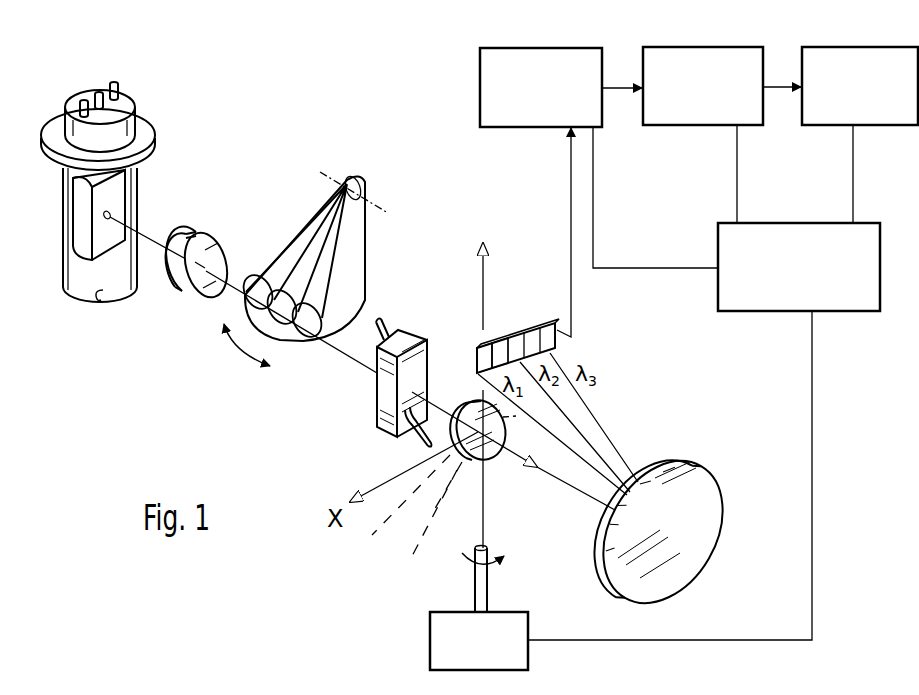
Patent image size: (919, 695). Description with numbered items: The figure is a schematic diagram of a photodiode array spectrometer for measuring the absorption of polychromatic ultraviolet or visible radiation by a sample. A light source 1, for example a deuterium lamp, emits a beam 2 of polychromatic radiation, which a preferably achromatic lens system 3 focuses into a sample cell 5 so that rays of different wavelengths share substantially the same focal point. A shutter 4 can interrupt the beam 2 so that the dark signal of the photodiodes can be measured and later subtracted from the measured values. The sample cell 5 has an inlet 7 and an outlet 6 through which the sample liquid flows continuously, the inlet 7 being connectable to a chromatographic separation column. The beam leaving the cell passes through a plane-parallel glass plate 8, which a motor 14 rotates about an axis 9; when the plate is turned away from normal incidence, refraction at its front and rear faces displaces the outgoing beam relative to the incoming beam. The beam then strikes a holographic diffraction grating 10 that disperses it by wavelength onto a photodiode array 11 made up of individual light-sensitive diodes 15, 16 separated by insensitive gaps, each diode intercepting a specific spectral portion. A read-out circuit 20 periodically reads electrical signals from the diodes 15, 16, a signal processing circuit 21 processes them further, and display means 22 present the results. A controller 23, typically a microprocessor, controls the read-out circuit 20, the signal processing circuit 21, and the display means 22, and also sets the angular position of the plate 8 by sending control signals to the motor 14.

The light source 1 is at (145, 132).
The beam 2 is at (157, 244).
The lens system 3 is at (190, 296).
The shutter 4 is at (352, 277).
The sample cell 5 is at (405, 337).
The outlet 6 is at (384, 323).
The inlet 7 is at (408, 446).
The plane-parallel glass plate 8 is at (490, 452).
The axis 9 is at (490, 580).
The holographic diffraction grating 10 is at (690, 543).
The photodiode array 11 is at (560, 338).
The motor 14 is at (430, 639).
The photodiode 15 is at (479, 346).
The photodiode 16 is at (500, 344).
The read-out circuit 20 is at (480, 90).
The signal processing circuit 21 is at (700, 125).
The display means 22 is at (900, 125).
The controller 23 is at (860, 311).